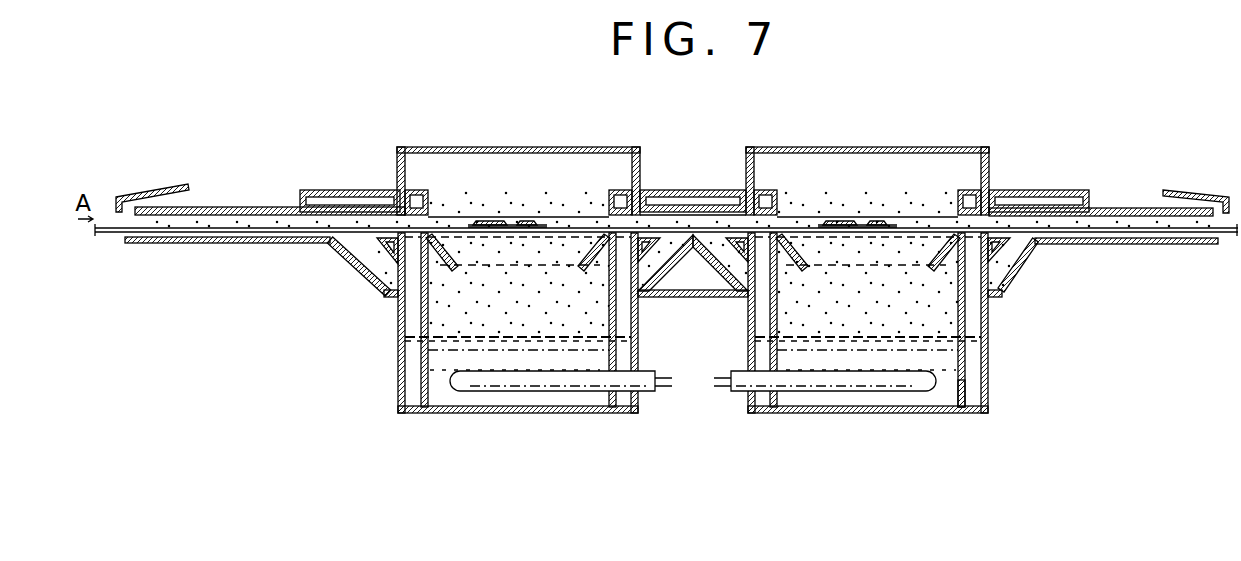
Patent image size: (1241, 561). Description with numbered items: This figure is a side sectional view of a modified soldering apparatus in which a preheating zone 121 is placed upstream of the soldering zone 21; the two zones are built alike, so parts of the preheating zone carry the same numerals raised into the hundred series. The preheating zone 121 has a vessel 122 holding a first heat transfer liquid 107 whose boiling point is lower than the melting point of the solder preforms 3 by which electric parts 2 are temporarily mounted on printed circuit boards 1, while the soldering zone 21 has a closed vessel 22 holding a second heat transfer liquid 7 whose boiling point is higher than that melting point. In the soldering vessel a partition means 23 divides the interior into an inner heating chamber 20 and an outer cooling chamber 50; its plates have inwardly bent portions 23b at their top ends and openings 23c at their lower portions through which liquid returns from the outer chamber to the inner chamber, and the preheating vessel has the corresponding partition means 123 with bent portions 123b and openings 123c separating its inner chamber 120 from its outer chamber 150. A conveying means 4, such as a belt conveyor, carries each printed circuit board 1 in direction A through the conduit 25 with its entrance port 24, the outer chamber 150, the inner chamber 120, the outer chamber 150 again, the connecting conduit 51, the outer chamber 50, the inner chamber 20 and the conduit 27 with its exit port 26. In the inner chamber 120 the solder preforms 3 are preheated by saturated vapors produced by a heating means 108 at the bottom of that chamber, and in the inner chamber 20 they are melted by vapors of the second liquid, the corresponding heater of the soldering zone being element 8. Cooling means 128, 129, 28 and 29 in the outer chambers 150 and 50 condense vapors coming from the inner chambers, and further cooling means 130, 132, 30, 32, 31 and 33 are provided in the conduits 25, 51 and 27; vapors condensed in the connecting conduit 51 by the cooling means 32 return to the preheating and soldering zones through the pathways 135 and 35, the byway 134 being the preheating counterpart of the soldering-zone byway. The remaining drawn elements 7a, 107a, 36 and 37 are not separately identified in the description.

The printed circuit board 1 is at (472, 222).
The electric parts 2 is at (527, 220).
The solder preforms 3 is at (505, 220).
The conveying means 4 is at (255, 226).
The heat transfer liquid 7 is at (943, 397).
The crucible inner wall 7a is at (990, 330).
The heater 8 is at (866, 383).
The inner heating chamber 20 is at (846, 317).
The soldering zone 21 is at (892, 142).
The closed vessel 22 is at (747, 393).
The partition means 23 is at (989, 362).
The inwardly bent portions 23b is at (937, 264).
The openings 23c is at (989, 388).
The entrance port 24 is at (142, 222).
The conduit 25 is at (176, 244).
The exit port 26 is at (1220, 237).
The conduit 27 is at (1122, 216).
The cooling means 28 is at (766, 193).
The cooling means 29 is at (1020, 280).
The cooling means 30 is at (692, 297).
The cooling means 31 is at (1037, 278).
The cooling means 32 is at (672, 192).
The cooling means 33 is at (1032, 190).
The pathway 35 is at (729, 265).
The flap 36 is at (160, 188).
The flap 37 is at (1173, 190).
The outer cooling chamber 50 is at (748, 331).
The connecting conduit 51 is at (705, 220).
The first heat transfer liquid 107 is at (507, 392).
The crucible inner wall 107a is at (413, 322).
The heating means 108 is at (563, 382).
The inner chamber 120 is at (490, 309).
The preheating zone 121 is at (513, 142).
The vessel 122 is at (445, 411).
The tank wall 123 is at (403, 352).
The baffle 123b is at (585, 264).
The tank bottom 123c is at (403, 388).
The cooling means 128 is at (413, 203).
The cooling means 129 is at (390, 253).
The cooling means 130 is at (352, 255).
The cooling means 132 is at (333, 190).
The brace 134 is at (362, 248).
The pathway 135 is at (655, 264).
The outer chamber 150 is at (623, 325).